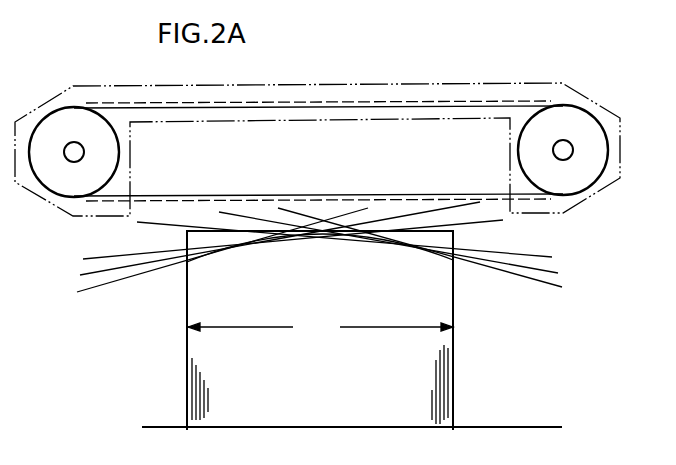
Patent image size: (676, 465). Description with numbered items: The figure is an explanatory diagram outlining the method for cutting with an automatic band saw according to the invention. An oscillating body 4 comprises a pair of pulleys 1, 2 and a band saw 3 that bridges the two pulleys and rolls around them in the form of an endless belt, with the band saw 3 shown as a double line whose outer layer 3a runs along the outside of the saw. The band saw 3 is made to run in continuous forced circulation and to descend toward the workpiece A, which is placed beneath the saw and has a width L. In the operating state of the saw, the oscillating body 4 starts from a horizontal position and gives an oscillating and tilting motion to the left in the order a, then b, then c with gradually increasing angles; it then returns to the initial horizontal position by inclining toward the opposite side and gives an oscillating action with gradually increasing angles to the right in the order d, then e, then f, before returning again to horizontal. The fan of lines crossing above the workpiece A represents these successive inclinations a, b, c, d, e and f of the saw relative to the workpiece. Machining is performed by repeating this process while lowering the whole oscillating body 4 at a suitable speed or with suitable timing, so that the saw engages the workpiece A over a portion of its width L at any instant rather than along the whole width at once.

The pulley 1 is at (71, 178).
The pulley 2 is at (578, 177).
The band saw 3 is at (314, 109).
The belt outer layer 3a is at (199, 106).
The oscillating body 4 is at (422, 84).
The tilting position a is at (287, 244).
The tilting position b is at (273, 244).
The tilting position c is at (216, 255).
The tilting position d is at (350, 244).
The tilting position e is at (395, 247).
The tilting position f is at (424, 254).
The width of the workpiece L is at (320, 326).
The workpiece A is at (333, 400).